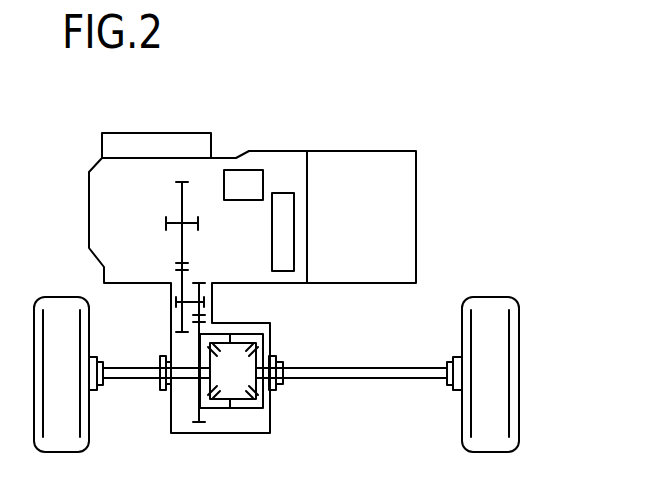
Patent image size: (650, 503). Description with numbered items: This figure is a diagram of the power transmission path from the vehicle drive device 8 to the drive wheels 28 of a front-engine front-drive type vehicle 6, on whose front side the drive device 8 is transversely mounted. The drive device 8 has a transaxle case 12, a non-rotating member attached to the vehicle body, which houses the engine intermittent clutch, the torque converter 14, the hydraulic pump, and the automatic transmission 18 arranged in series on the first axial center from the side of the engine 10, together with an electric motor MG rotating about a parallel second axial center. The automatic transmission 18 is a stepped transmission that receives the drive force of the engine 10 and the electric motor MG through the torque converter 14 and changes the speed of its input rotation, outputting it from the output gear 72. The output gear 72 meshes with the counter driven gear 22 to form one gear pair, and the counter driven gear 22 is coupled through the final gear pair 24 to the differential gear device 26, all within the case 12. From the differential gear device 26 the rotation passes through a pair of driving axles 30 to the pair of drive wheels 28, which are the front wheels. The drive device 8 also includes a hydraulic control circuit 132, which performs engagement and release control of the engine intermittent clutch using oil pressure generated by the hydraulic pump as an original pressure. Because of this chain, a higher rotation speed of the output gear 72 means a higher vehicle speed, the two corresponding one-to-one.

The vehicle 6 is at (546, 66).
The vehicle drive device 8 is at (416, 131).
The engine 10 is at (346, 272).
The transaxle case 12 is at (270, 150).
The torque converter 14 is at (283, 265).
The automatic transmission 18 is at (93, 201).
The counter driven gear 22 is at (176, 315).
The final gear pair 24 is at (222, 308).
The differential gear device 26 is at (258, 428).
The drive wheels 28 is at (62, 303).
The driving axles 30 is at (120, 373).
The output gear 72 is at (178, 182).
The hydraulic control circuit 132 is at (114, 138).